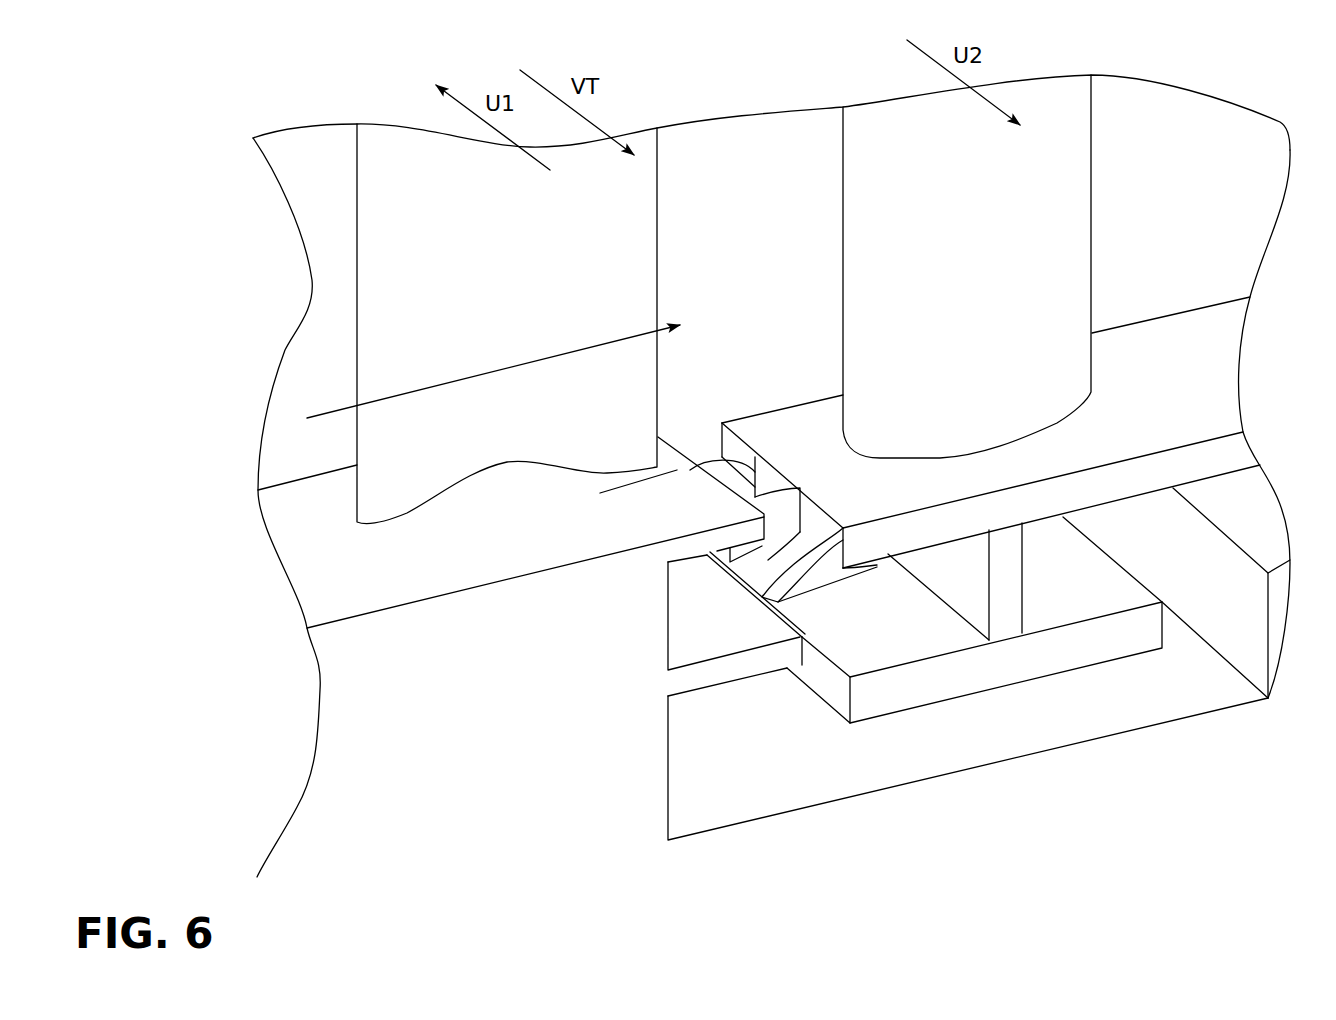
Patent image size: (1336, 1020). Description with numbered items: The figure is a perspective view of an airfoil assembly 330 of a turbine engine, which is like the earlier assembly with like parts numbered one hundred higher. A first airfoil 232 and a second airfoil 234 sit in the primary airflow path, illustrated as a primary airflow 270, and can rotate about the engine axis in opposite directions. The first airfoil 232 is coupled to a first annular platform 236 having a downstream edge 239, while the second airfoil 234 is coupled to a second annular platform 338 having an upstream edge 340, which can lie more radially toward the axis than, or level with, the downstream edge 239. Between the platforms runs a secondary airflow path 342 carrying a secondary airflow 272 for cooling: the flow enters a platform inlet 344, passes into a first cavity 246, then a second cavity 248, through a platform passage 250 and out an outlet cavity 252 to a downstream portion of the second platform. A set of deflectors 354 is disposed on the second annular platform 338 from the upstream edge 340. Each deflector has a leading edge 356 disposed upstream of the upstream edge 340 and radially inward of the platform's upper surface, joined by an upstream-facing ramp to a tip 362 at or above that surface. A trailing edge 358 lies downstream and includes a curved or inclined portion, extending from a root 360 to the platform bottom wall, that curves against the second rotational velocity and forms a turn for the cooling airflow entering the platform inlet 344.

The airfoil assembly 330 is at (107, 62).
The first airfoil 232 is at (353, 268).
The second airfoil 234 is at (1097, 218).
The first annular platform 236 is at (430, 598).
The downstream edge 239 is at (694, 428).
The first cavity 246 is at (685, 653).
The second cavity 248 is at (939, 593).
The platform passage 250 is at (907, 763).
The outlet cavity 252 is at (1120, 550).
The primary airflow 270 is at (323, 413).
The secondary airflow 272 is at (670, 472).
The second annular platform 338 is at (1102, 453).
The upstream edge 340 is at (742, 483).
The secondary airflow path 342 is at (1056, 752).
The platform inlet 344 is at (702, 441).
The set of deflectors 354 is at (810, 609).
The leading edge 356 is at (768, 588).
The trailing edge 358 is at (879, 567).
The root 360 is at (836, 592).
The tip 362 is at (841, 525).